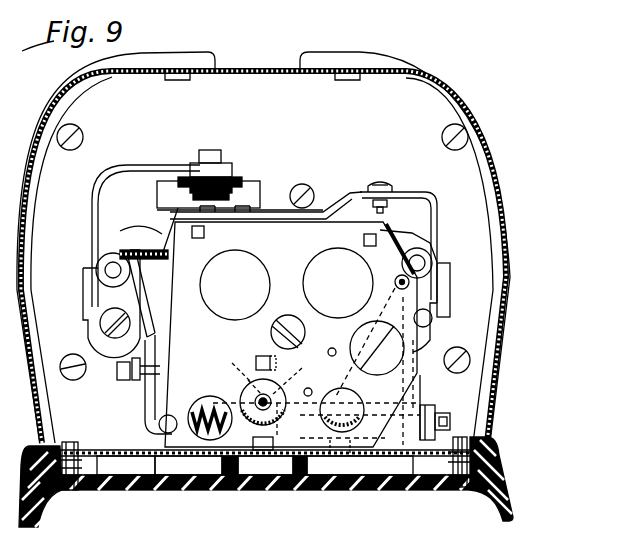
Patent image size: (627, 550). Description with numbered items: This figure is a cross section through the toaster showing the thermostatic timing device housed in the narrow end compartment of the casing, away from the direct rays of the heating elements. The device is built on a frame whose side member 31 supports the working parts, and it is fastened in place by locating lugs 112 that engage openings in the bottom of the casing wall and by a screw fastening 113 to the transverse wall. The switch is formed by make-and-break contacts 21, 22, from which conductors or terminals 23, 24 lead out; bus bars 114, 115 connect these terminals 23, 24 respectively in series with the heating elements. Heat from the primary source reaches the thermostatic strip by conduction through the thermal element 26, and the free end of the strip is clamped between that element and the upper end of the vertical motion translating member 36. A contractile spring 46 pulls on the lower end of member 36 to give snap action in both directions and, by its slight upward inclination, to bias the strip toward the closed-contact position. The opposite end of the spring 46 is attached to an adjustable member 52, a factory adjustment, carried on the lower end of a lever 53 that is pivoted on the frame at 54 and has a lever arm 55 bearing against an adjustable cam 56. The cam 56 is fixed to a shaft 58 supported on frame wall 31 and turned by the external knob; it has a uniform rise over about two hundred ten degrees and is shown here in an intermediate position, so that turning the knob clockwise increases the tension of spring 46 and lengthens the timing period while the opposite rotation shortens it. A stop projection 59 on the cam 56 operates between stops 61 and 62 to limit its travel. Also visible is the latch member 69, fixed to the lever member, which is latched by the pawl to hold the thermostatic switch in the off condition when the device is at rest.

The bus bar 114 is at (128, 172).
The conductor 23 is at (214, 152).
The screw fastening 113 is at (309, 186).
The conductor 24 is at (352, 192).
The bus bar 115 is at (438, 204).
The make-and-break contact 21 is at (200, 202).
The make-and-break contact 22 is at (187, 207).
The thermal element 26 is at (131, 229).
The frame side member 31 is at (291, 319).
The motion translating member 36 is at (133, 288).
The pivot 54 is at (397, 281).
The latch member 69 is at (283, 318).
The stop 61 is at (262, 356).
The stop projection 59 is at (238, 370).
The cam 56 is at (296, 372).
The shaft 58 is at (253, 396).
The lever 53 is at (420, 384).
The adjustable member 52 is at (439, 414).
The locating lug 112 is at (212, 457).
The stop 62 is at (265, 466).
The contractile spring 46 is at (166, 434).
The lever arm 55 is at (312, 462).